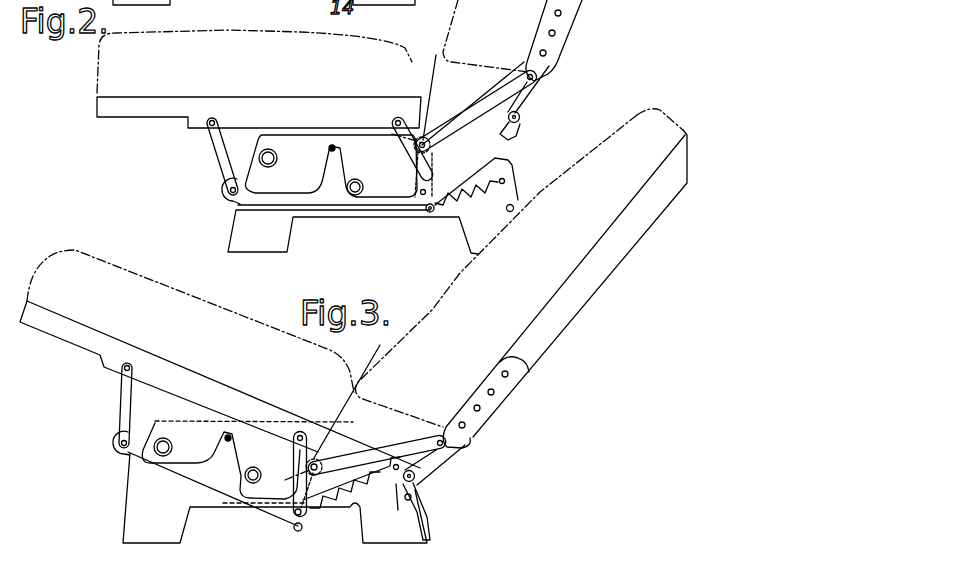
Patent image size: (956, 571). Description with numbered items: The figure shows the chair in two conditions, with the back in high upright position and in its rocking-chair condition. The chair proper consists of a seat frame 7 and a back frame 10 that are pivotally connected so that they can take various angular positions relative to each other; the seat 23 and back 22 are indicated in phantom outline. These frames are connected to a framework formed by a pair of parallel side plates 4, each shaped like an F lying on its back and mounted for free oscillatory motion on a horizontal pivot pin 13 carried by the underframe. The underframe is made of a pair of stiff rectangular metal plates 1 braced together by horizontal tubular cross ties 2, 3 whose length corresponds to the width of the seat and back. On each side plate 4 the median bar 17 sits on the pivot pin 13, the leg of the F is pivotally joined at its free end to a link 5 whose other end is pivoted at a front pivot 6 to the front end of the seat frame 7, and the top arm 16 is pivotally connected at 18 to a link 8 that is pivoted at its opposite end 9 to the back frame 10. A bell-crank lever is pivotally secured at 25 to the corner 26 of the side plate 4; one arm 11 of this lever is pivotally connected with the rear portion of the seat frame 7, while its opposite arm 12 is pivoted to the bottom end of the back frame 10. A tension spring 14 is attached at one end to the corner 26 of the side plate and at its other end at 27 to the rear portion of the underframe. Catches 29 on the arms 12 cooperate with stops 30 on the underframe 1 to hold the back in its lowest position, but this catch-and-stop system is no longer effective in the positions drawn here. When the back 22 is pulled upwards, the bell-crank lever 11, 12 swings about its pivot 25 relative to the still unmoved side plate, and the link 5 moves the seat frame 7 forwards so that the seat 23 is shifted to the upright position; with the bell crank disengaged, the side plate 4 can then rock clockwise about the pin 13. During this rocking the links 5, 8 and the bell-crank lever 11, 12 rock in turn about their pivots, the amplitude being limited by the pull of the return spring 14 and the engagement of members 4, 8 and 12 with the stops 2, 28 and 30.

In FIG. 2, the rectangular metal plates 1 is at (331, 166).
In FIG. 3, the rectangular metal plates 1 is at (247, 460).
In FIG. 2, the tubular cross tie 2 is at (278, 160).
In FIG. 3, the tubular cross tie 2 is at (171, 445).
In FIG. 2, the tubular cross tie 3 is at (363, 184).
In FIG. 3, the tubular cross tie 3 is at (260, 470).
In FIG. 2, the side plate 4 is at (312, 206).
In FIG. 3, the side plate 4 is at (165, 468).
In FIG. 2, the link 5 is at (225, 154).
In FIG. 3, the link 5 is at (125, 404).
In FIG. 2, the front pivot 6 is at (215, 122).
In FIG. 3, the front pivot 6 is at (129, 366).
In FIG. 2, the seat frame 7 is at (267, 106).
In FIG. 3, the seat frame 7 is at (182, 368).
In FIG. 2, the link 8 is at (492, 100).
In FIG. 3, the link 8 is at (410, 455).
In FIG. 2, the pivot 9 is at (553, 70).
In FIG. 3, the pivot 9 is at (468, 447).
In FIG. 2, the back frame 10 is at (545, 56).
In FIG. 3, the back frame 10 is at (548, 353).
In FIG. 2, the arm of bell-crank lever 11 is at (405, 145).
In FIG. 3, the arm of bell-crank lever 11 is at (293, 470).
In FIG. 2, the arm of bell-crank lever 12 is at (467, 158).
In FIG. 3, the arm of bell-crank lever 12 is at (388, 486).
In FIG. 2, the pivot pin 13 is at (333, 145).
In FIG. 3, the pivot pin 13 is at (231, 436).
In FIG. 2, the tension spring 14 is at (458, 215).
In FIG. 3, the tension spring 14 is at (357, 507).
In FIG. 2, the top arm 16 is at (450, 122).
In FIG. 3, the top arm 16 is at (332, 466).
In FIG. 2, the median bar 17 is at (338, 163).
In FIG. 3, the median bar 17 is at (240, 449).
In FIG. 2, the pivot 18 is at (423, 141).
In FIG. 3, the pivot 18 is at (315, 462).
In FIG. 2, the back 22 is at (603, 144).
In FIG. 3, the back 22 is at (519, 268).
In FIG. 2, the seat 23 is at (228, 33).
In FIG. 3, the seat 23 is at (203, 306).
In FIG. 2, the pivot 25 is at (431, 213).
In FIG. 3, the pivot 25 is at (303, 516).
In FIG. 2, the corner of side plate 26 is at (419, 216).
In FIG. 3, the corner of side plate 26 is at (297, 531).
In FIG. 2, the spring attachment point 27 is at (504, 182).
In FIG. 3, the spring attachment point 27 is at (396, 463).
In FIG. 2, the stop 28 is at (521, 110).
In FIG. 3, the stop 28 is at (414, 483).
In FIG. 2, the catch 29 is at (510, 138).
In FIG. 3, the catch 29 is at (406, 526).
In FIG. 2, the stop 30 is at (497, 204).
In FIG. 3, the stop 30 is at (426, 515).